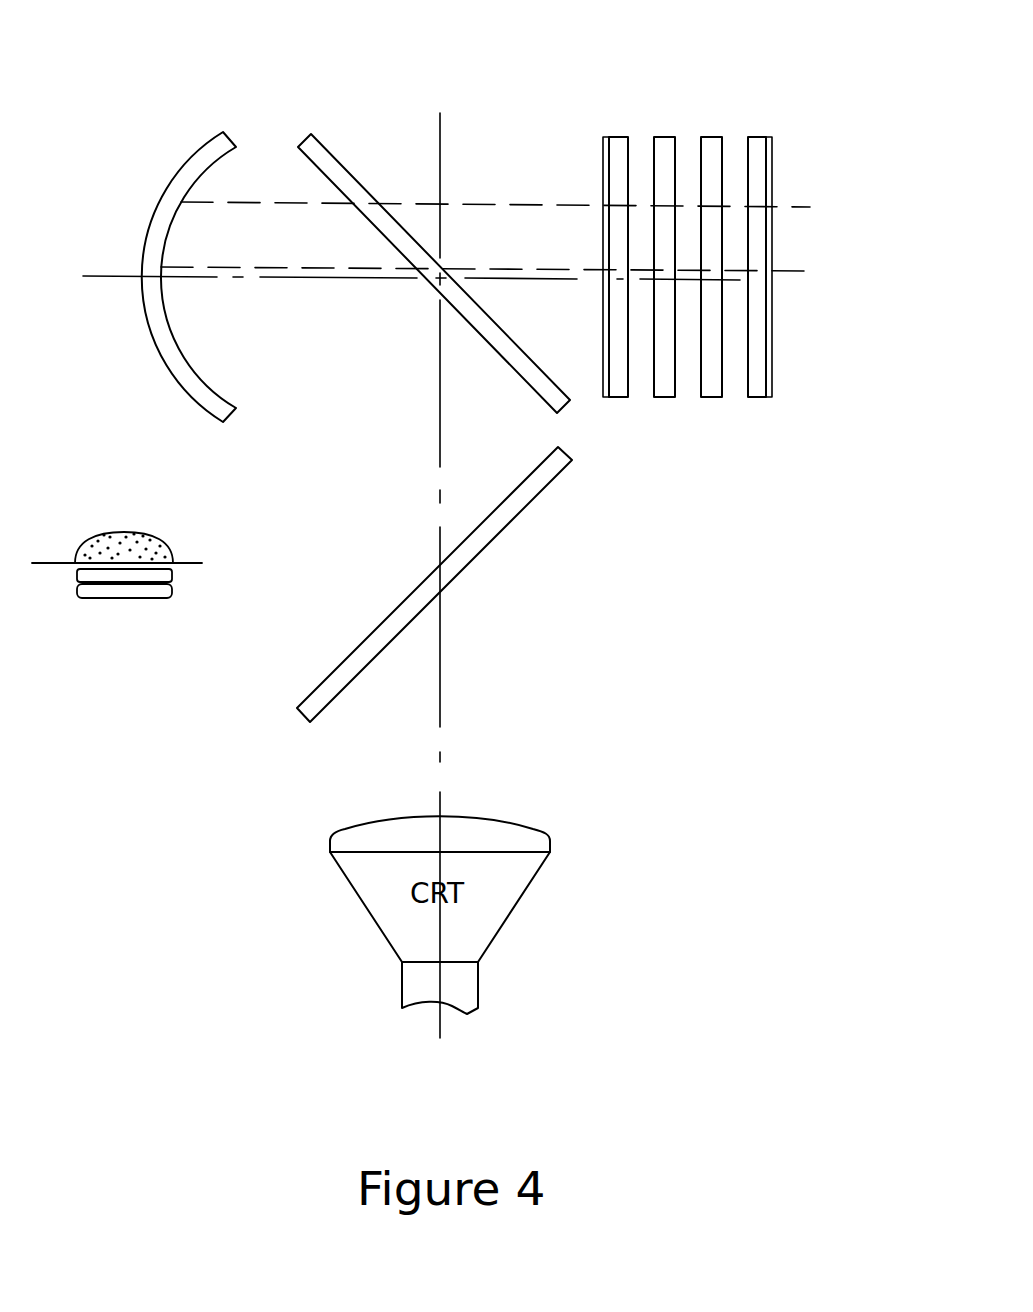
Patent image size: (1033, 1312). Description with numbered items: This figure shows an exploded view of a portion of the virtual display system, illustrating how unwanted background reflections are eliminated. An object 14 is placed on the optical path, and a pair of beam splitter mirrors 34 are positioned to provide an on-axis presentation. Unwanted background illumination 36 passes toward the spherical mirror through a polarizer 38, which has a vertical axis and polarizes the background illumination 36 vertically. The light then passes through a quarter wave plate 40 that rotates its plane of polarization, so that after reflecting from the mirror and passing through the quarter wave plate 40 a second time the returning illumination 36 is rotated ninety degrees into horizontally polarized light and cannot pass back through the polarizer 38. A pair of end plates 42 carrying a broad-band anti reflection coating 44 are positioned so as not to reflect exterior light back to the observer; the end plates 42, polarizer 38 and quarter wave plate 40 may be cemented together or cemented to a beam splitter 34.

The object 14 is at (172, 592).
The beam splitter mirror 34 is at (318, 135).
The background illumination 36 is at (803, 208).
The polarizer 38 is at (720, 390).
The quarter wave plate 40 is at (673, 390).
The end plate 42 is at (615, 136).
The broad-band anti reflection coating 44 is at (602, 157).